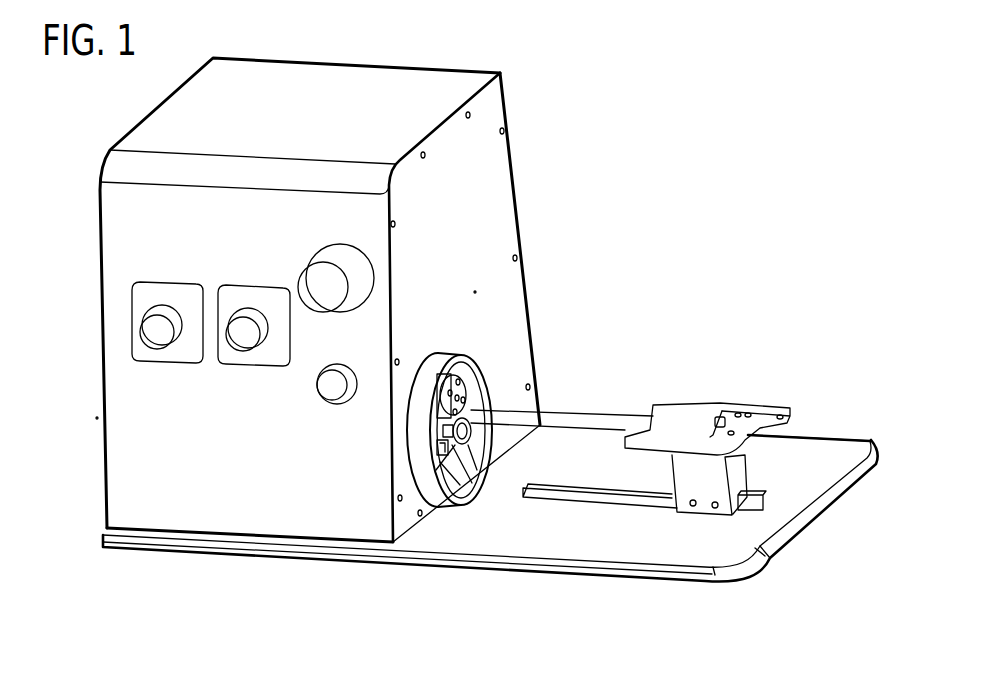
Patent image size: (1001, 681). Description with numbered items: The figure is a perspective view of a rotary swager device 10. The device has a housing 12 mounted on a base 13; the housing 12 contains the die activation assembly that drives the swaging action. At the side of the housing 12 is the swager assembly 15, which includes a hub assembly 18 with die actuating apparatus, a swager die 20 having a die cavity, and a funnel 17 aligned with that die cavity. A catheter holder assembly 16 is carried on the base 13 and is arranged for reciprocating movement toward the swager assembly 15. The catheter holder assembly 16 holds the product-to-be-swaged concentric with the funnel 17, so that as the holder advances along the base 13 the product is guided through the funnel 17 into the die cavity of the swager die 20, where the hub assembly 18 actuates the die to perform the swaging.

The rotary swager device 10 is at (708, 43).
The housing 12 is at (473, 180).
The base 13 is at (737, 540).
The swager assembly 15 is at (423, 472).
The catheter holder assembly 16 is at (687, 407).
The funnel 17 is at (466, 432).
The hub assembly 18 is at (465, 388).
The swager die 20 is at (442, 450).